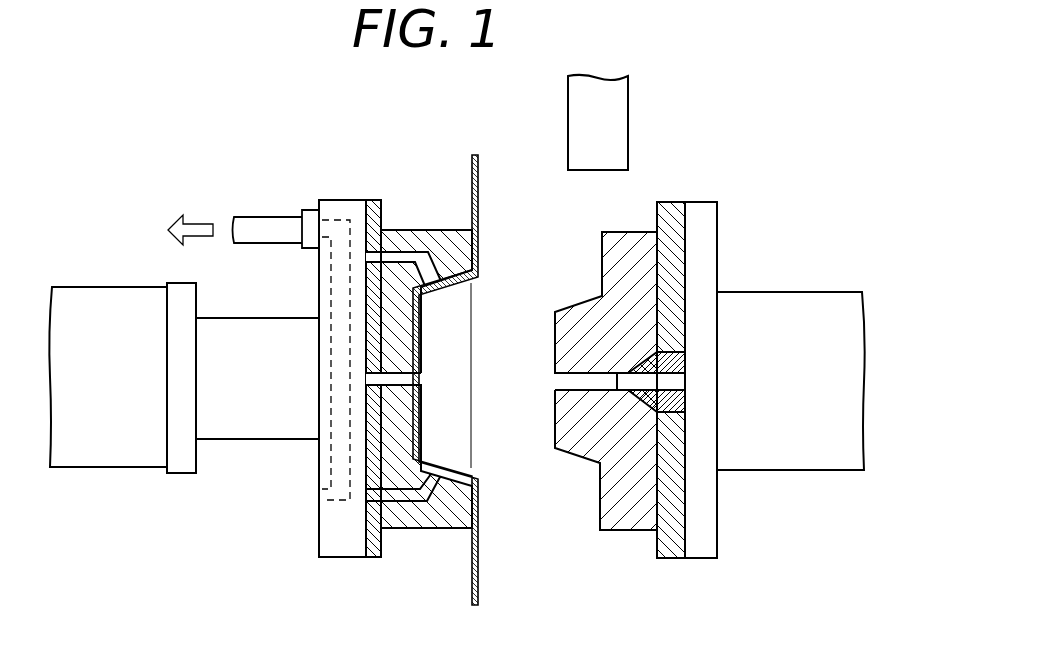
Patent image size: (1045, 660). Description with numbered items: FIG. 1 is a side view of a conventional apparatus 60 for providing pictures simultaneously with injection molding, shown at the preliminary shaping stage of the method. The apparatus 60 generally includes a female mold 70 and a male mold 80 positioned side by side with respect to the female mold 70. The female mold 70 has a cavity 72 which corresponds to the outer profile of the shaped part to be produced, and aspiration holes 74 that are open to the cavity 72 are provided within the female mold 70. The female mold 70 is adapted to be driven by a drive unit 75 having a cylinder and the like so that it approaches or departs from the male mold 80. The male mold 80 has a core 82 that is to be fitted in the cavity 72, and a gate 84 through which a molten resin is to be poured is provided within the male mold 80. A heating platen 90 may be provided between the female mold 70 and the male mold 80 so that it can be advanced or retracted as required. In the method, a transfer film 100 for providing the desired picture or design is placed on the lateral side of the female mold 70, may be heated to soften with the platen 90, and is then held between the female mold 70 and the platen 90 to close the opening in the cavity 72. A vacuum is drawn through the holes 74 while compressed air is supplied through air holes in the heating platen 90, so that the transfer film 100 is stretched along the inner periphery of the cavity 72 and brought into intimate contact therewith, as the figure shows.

The apparatus 60 is at (722, 137).
The female mold 70 is at (422, 516).
The cavity 72 is at (447, 303).
The aspiration holes 74 is at (393, 229).
The drive unit 75 is at (108, 485).
The male mold 80 is at (622, 503).
The core 82 is at (575, 458).
The gate 84 is at (555, 380).
The heating platen 90 is at (575, 107).
The transfer film 100 is at (408, 435).